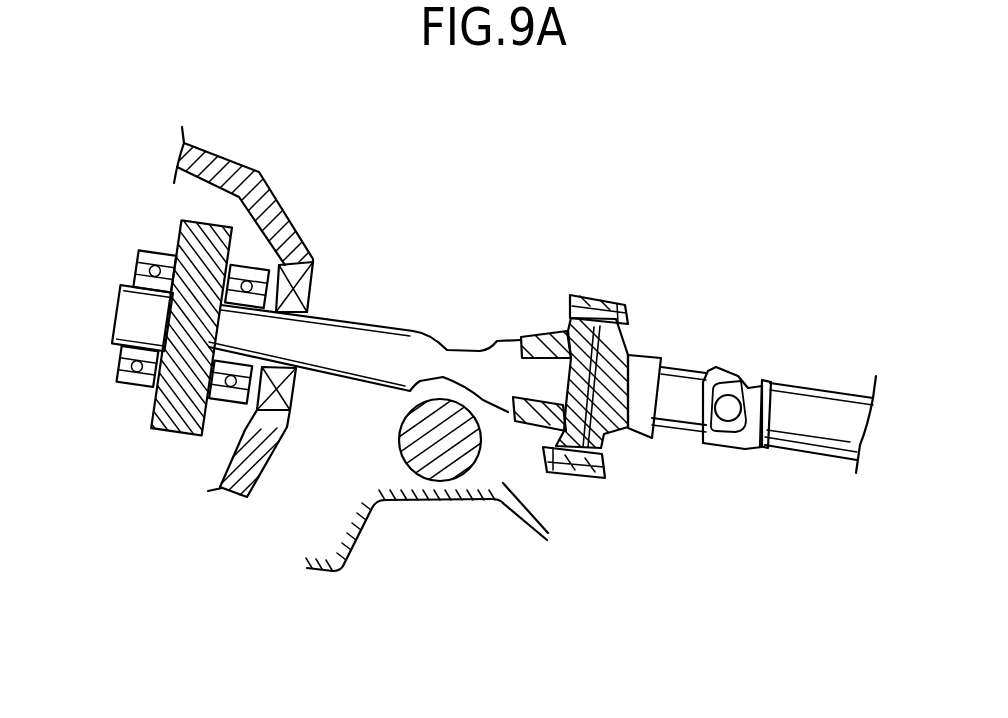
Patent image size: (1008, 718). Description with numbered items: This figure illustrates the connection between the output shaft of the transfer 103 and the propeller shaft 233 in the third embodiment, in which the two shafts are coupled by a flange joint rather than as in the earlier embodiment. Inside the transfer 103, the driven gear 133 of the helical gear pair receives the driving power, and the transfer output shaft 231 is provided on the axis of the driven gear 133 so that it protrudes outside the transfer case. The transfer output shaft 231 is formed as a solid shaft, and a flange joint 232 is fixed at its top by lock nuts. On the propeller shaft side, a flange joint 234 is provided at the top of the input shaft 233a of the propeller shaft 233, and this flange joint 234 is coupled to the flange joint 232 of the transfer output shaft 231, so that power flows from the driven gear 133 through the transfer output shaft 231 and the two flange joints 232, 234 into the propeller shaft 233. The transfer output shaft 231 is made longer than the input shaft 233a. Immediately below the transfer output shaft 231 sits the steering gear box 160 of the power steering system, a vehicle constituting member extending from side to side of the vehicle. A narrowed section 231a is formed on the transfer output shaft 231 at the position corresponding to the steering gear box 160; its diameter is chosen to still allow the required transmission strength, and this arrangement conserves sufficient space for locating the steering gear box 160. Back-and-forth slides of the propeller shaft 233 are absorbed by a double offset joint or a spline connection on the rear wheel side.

The transfer 103 is at (259, 146).
The driven gear 133 is at (172, 437).
The steering gear box 160 is at (399, 441).
The transfer output shaft 231 is at (119, 320).
The narrowed section 231a is at (460, 352).
The flange joint 232 is at (547, 338).
The propeller shaft 233 is at (819, 390).
The input shaft 233a is at (683, 368).
The flange joint 234 is at (618, 355).